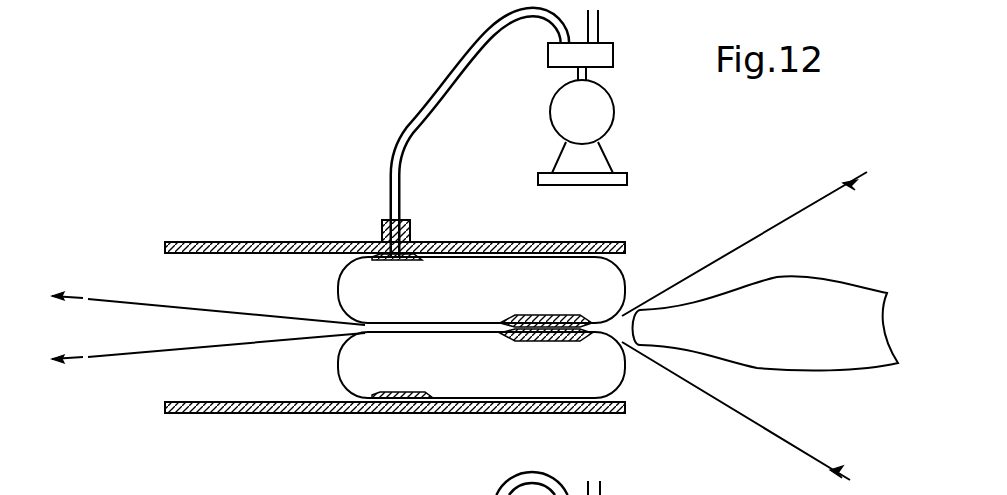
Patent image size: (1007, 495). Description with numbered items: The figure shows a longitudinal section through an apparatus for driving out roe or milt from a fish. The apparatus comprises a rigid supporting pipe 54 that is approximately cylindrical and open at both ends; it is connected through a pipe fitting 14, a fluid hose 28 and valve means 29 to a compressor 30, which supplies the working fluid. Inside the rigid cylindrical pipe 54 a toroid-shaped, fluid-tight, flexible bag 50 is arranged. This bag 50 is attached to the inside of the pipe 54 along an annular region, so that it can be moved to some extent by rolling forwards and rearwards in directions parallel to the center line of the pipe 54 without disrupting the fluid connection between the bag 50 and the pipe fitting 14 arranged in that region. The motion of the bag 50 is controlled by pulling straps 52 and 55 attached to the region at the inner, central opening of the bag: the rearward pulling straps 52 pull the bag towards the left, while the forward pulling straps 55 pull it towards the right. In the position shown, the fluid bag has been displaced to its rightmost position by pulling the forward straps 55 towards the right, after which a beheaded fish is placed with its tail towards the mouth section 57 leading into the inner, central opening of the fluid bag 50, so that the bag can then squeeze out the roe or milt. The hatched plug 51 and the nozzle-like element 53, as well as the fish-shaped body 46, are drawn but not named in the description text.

The pipe fitting 14 is at (381, 224).
The fluid hose 28 is at (465, 68).
The valve means 29 is at (608, 55).
The compressor 30 is at (596, 125).
The yarn body 46 is at (832, 349).
The fluid-tight flexible bag 50 is at (481, 302).
The cushion inlet 51 is at (411, 262).
The rearward pulling straps 52 is at (124, 299).
The nozzle 53 is at (540, 316).
The rigid supporting pipe 54 is at (278, 240).
The forward pulling straps 55 is at (806, 202).
The mouth section 57 is at (665, 302).